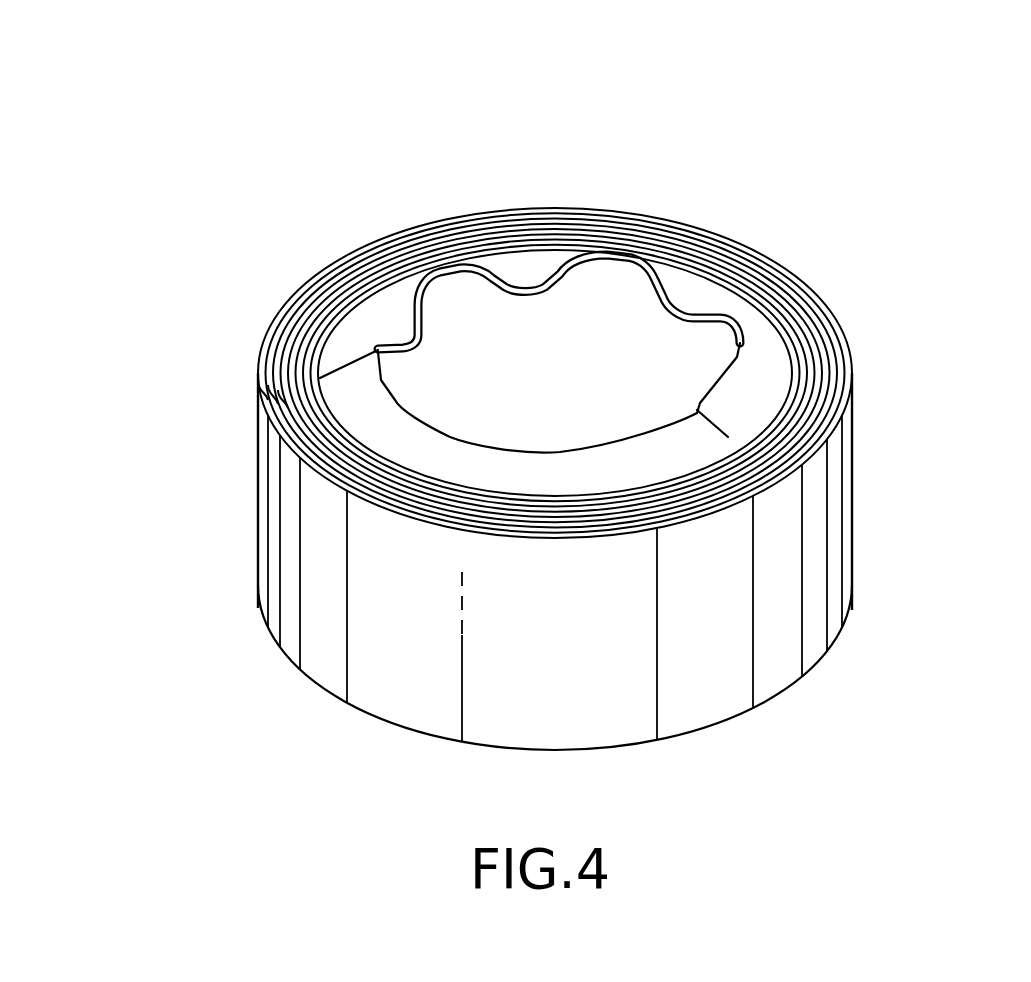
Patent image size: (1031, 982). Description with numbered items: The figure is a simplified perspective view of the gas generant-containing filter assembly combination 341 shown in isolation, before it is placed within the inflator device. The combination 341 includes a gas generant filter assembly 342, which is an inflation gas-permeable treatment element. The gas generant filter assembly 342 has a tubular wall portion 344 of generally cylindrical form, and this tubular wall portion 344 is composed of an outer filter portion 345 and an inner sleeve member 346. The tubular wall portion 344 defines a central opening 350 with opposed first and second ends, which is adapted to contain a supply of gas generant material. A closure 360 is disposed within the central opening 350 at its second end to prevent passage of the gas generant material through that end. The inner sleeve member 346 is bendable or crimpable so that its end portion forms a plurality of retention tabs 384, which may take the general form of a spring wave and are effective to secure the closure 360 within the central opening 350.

The gas generant-containing filter assembly combination 341 is at (592, 433).
The gas generant filter assembly 342 is at (322, 618).
The tubular wall portion 344 is at (742, 633).
The outer filter portion 345 is at (597, 680).
The inner sleeve member 346 is at (355, 397).
The central opening 350 is at (523, 283).
The closure 360 is at (607, 323).
The retention tabs 384 is at (395, 328).